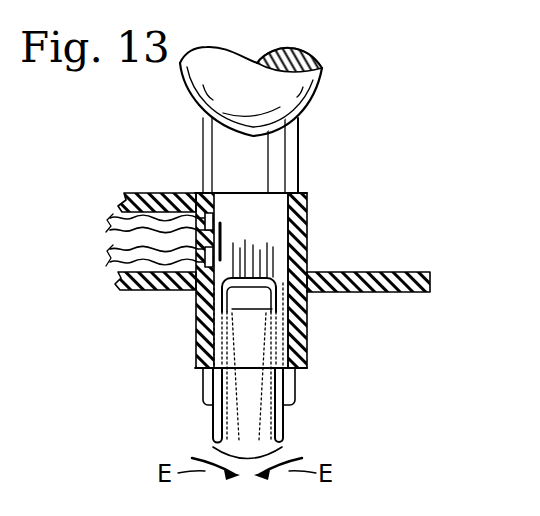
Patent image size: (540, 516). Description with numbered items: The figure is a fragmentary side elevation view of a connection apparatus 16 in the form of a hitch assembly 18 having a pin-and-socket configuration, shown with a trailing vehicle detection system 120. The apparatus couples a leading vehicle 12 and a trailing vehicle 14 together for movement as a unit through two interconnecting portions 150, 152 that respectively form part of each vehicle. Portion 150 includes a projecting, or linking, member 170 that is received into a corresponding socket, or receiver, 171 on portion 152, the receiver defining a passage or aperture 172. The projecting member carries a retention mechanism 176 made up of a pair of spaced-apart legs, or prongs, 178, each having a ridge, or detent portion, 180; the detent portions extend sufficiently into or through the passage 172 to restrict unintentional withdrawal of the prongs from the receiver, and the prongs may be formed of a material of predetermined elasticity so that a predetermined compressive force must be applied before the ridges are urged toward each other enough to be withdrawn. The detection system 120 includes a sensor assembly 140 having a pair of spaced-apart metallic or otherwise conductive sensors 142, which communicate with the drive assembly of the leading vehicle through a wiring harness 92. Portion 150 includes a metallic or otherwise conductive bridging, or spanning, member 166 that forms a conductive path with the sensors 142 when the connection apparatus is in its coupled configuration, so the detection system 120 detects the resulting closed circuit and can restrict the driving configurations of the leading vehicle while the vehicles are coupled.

The leading vehicle 12 is at (170, 180).
The trailing vehicle 14 is at (341, 72).
The connection apparatus 16 is at (423, 170).
The hitch assembly 18 is at (382, 187).
The wiring harness 92 is at (156, 248).
The detection system 120 is at (171, 274).
The sensor assembly 140 is at (188, 275).
The conductive sensors 142 is at (214, 213).
The interconnecting portion 150 is at (324, 108).
The interconnecting portion 152 is at (375, 261).
The conductive bridging member 166 is at (220, 219).
The projecting member 170 is at (293, 237).
The receiver 171 is at (307, 212).
The passage 172 is at (248, 359).
The retention mechanism 176 is at (321, 436).
The prongs 178 is at (215, 449).
The detent portions 180 is at (207, 378).